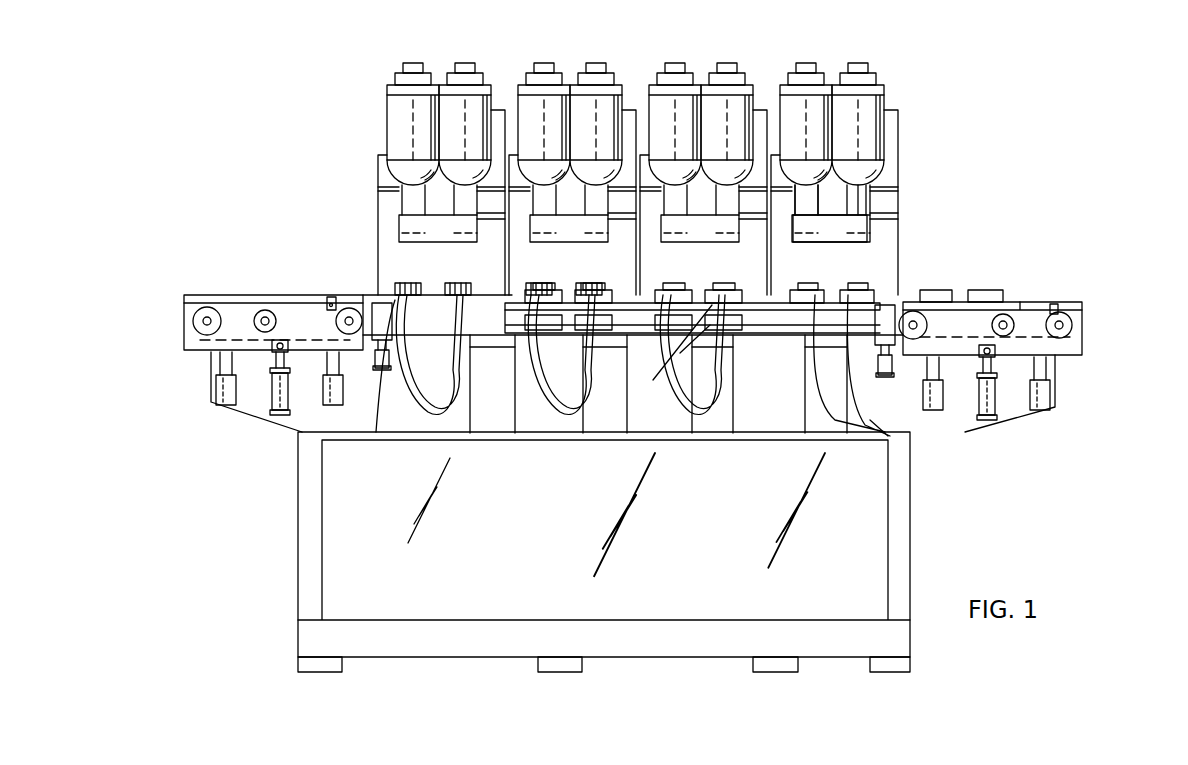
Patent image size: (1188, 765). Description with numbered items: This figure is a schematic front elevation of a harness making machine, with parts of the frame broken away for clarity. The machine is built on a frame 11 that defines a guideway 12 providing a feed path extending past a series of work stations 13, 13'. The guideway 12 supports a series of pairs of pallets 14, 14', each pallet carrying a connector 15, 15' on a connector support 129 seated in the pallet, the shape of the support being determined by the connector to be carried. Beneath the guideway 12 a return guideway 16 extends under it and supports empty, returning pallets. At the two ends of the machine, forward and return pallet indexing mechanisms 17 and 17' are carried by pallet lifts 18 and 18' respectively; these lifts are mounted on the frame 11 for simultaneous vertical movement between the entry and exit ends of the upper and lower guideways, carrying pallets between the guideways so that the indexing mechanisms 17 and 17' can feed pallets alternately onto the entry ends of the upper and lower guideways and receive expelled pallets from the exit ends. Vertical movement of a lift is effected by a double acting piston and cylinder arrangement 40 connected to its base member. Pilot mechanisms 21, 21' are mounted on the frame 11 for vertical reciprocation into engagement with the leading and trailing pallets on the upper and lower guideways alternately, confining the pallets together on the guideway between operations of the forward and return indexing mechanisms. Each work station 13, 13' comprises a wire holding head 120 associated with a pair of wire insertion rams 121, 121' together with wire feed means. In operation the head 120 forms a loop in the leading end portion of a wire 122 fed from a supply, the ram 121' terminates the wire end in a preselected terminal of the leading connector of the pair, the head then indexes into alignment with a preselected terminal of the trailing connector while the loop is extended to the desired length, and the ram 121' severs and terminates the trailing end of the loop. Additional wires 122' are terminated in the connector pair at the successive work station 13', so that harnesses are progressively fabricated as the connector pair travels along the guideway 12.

The frame 11 is at (297, 489).
The guideway 12 is at (518, 307).
The work station 13 is at (865, 161).
The work station 13' is at (731, 155).
The pallet 14 is at (767, 308).
The pallet 14' is at (608, 313).
The connector 15 is at (863, 278).
The connector 15' is at (808, 278).
The return guideway 16 is at (642, 359).
The forward pallet indexing mechanism 17 is at (1006, 306).
The return pallet indexing mechanism 17' is at (273, 289).
The pallet lift 18 is at (1038, 383).
The pallet lift 18' is at (232, 377).
The pilot mechanism 21 is at (897, 358).
The pilot mechanism 21' is at (356, 306).
The double acting piston and cylinder arrangement 40 is at (1000, 395).
The wire holding head 120 is at (858, 227).
The wire insertion ram 121 is at (922, 194).
The wire insertion ram 121' is at (761, 233).
The wire 122 is at (924, 448).
The additional wire 122' is at (735, 365).
The connector support 129 is at (672, 358).